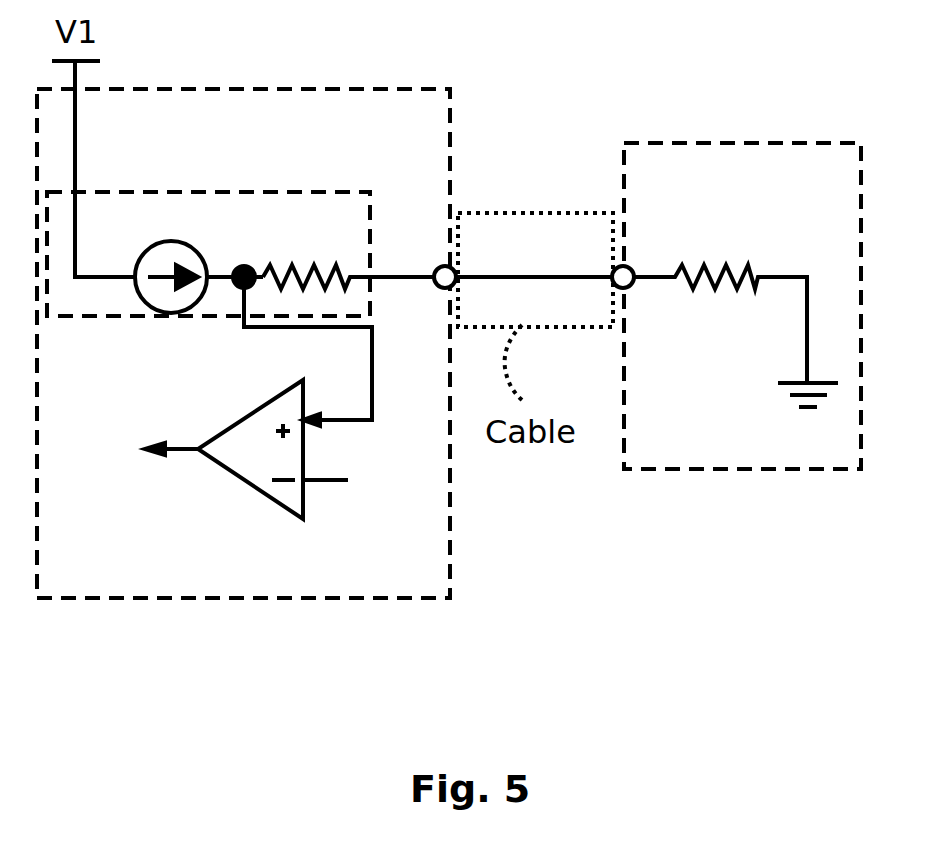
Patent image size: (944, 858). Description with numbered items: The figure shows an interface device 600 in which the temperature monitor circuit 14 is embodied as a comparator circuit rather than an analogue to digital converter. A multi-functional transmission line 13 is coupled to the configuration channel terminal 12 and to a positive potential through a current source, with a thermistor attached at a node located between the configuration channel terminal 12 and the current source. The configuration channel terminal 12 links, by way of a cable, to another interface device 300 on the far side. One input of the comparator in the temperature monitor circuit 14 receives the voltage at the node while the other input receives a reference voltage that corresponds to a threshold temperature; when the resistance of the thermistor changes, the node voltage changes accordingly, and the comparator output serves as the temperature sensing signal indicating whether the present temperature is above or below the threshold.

The interface device 600 is at (331, 88).
The multi-functional transmission line 13 is at (332, 192).
The configuration channel terminal 12 is at (436, 268).
The temperature monitor circuit 14 is at (247, 482).
The interface device 300 is at (691, 138).